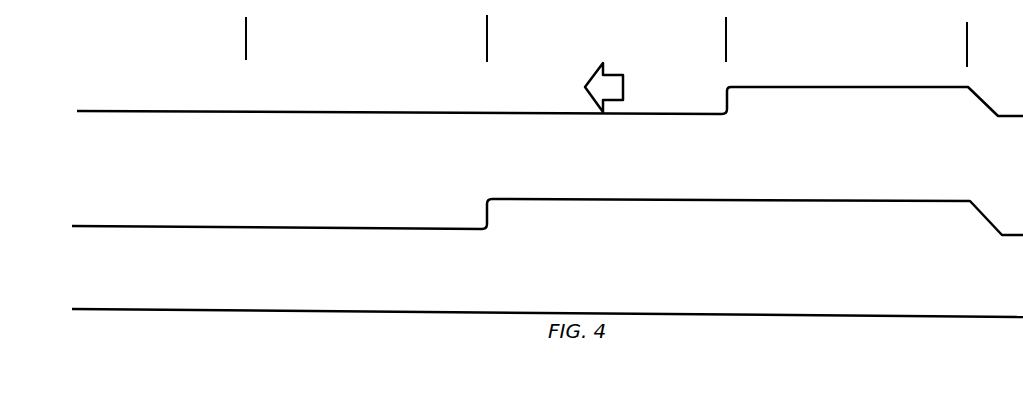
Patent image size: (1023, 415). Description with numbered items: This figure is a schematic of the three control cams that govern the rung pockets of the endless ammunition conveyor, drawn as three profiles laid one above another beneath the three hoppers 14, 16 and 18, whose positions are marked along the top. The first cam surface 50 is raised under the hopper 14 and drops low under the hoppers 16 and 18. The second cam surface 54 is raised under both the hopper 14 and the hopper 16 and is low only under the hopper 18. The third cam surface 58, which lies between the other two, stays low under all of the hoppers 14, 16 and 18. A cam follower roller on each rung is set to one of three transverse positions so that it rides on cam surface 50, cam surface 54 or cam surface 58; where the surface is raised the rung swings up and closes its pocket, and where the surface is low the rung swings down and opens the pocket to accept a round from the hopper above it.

The hopper 14 is at (742, 28).
The hopper 16 is at (709, 28).
The hopper 18 is at (470, 27).
The first cam surface 50 is at (862, 87).
The second cam surface 54 is at (753, 199).
The third cam surface 58 is at (578, 312).